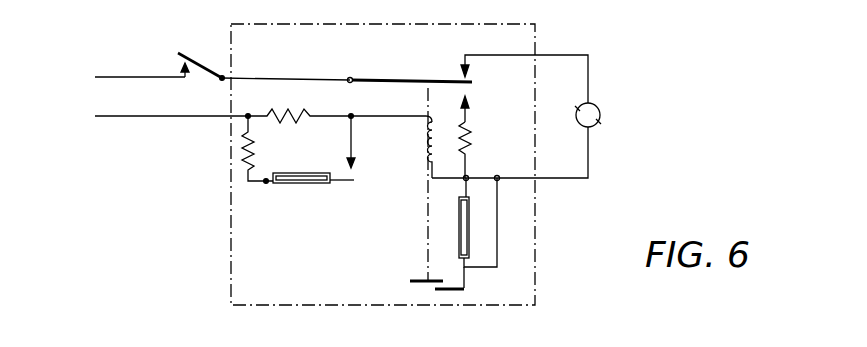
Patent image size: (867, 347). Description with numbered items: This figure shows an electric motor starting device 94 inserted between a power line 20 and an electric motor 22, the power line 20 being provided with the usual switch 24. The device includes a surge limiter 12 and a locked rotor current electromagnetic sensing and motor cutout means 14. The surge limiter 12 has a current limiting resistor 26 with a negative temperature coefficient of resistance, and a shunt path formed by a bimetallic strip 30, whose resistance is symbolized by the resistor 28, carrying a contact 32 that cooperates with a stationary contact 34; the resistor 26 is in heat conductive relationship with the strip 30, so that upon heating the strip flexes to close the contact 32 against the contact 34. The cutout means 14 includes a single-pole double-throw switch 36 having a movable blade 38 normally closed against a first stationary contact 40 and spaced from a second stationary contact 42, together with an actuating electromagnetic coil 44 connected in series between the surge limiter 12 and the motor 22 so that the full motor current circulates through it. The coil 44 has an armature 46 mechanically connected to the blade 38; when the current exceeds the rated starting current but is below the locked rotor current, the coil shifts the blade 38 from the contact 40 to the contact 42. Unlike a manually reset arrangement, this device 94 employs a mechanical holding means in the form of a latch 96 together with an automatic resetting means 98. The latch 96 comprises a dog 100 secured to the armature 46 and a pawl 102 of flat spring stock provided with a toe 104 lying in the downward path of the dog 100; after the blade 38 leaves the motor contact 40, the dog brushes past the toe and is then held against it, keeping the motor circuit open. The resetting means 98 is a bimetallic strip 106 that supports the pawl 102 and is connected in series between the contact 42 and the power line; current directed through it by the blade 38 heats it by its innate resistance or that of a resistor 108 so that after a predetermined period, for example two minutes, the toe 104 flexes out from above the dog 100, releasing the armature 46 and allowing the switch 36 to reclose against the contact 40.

The surge limiter 12 is at (283, 191).
The locked rotor current electromagnetic sensing and motor cutout means 14 is at (421, 168).
The power line 20 is at (125, 100).
The electric motor 22 is at (603, 114).
The switch 24 is at (201, 57).
The current limiting resistor 26 is at (289, 122).
The resistor 28 is at (240, 158).
The bimetallic strip 30 is at (290, 170).
The contact 32 is at (338, 185).
The stationary contact 34 is at (354, 166).
The single-pole double-throw switch 36 is at (461, 68).
The movable blade 38 is at (397, 80).
The first stationary contact 40 is at (473, 75).
The second stationary contact 42 is at (469, 103).
The actuating electromagnetic coil 44 is at (422, 160).
The armature 46 is at (428, 105).
The electric motor starting device 94 is at (537, 43).
The latch 96 is at (413, 269).
The automatic resetting means 98 is at (477, 233).
The dog 100 is at (416, 283).
The pawl 102 is at (466, 286).
The toe 104 is at (446, 291).
The bimetallic strip 106 is at (468, 215).
The resistor 108 is at (470, 137).